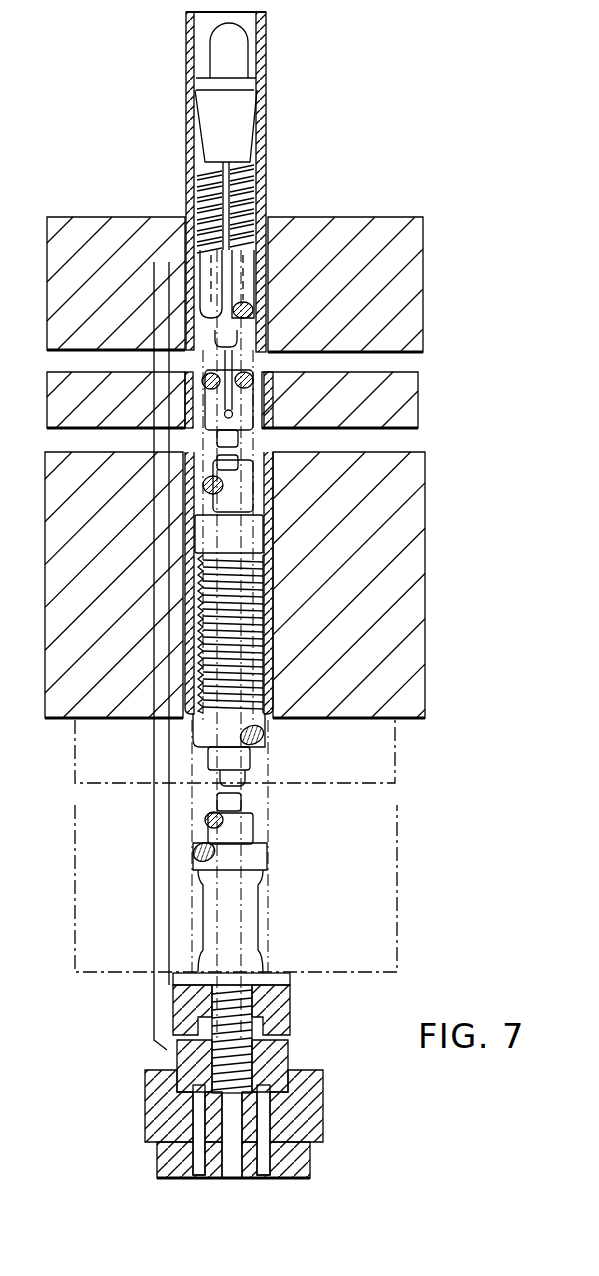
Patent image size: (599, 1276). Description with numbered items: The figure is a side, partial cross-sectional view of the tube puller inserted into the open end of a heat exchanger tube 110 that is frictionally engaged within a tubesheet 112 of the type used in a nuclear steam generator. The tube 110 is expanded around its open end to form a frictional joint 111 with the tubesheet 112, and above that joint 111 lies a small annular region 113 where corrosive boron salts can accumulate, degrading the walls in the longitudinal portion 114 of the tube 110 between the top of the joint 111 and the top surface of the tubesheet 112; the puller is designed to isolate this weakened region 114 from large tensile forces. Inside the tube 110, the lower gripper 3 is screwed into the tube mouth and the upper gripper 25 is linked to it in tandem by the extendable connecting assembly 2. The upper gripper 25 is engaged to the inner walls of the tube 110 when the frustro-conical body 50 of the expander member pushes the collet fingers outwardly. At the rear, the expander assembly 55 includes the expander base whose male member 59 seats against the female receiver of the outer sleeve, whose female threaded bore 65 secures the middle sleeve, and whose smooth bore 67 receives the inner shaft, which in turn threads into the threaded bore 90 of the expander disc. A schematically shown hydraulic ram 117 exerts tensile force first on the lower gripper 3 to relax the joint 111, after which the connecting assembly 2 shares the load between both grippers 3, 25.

The tube 110 is at (267, 62).
The frustro-conical body 50 is at (236, 125).
The upper gripper 25 is at (266, 185).
The annular region 113 is at (268, 264).
The longitudinal portion 114 is at (168, 338).
The tubesheet 112 is at (364, 622).
The frictional joint 111 is at (274, 538).
The connecting assembly 2 is at (153, 640).
The lower gripper 3 is at (262, 643).
The hydraulic ram 117 is at (415, 819).
The female threaded bore 65 is at (213, 1032).
The male member 59 is at (258, 1048).
The smooth bore 67 is at (252, 1133).
The threaded bore 90 is at (225, 1172).
The expander assembly 55 is at (348, 1043).